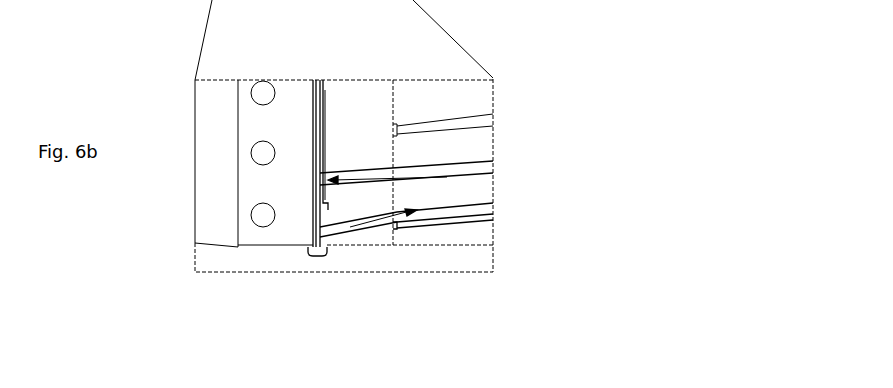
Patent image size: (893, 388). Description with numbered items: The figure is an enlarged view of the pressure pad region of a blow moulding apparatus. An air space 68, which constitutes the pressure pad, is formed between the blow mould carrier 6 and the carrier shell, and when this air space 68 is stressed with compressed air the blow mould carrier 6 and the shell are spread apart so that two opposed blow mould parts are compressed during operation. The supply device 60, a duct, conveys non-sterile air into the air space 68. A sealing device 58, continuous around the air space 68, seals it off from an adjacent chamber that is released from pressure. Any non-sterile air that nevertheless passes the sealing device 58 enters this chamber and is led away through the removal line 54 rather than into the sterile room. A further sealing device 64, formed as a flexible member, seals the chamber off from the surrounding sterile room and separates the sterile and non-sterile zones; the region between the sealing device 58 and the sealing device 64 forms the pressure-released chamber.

The blow mould carrier 6 is at (383, 200).
The removal line 54 is at (387, 207).
The sealing device 58 is at (328, 208).
The supply device 60 is at (383, 173).
The further sealing device 64 is at (318, 256).
The air space 68 is at (322, 133).